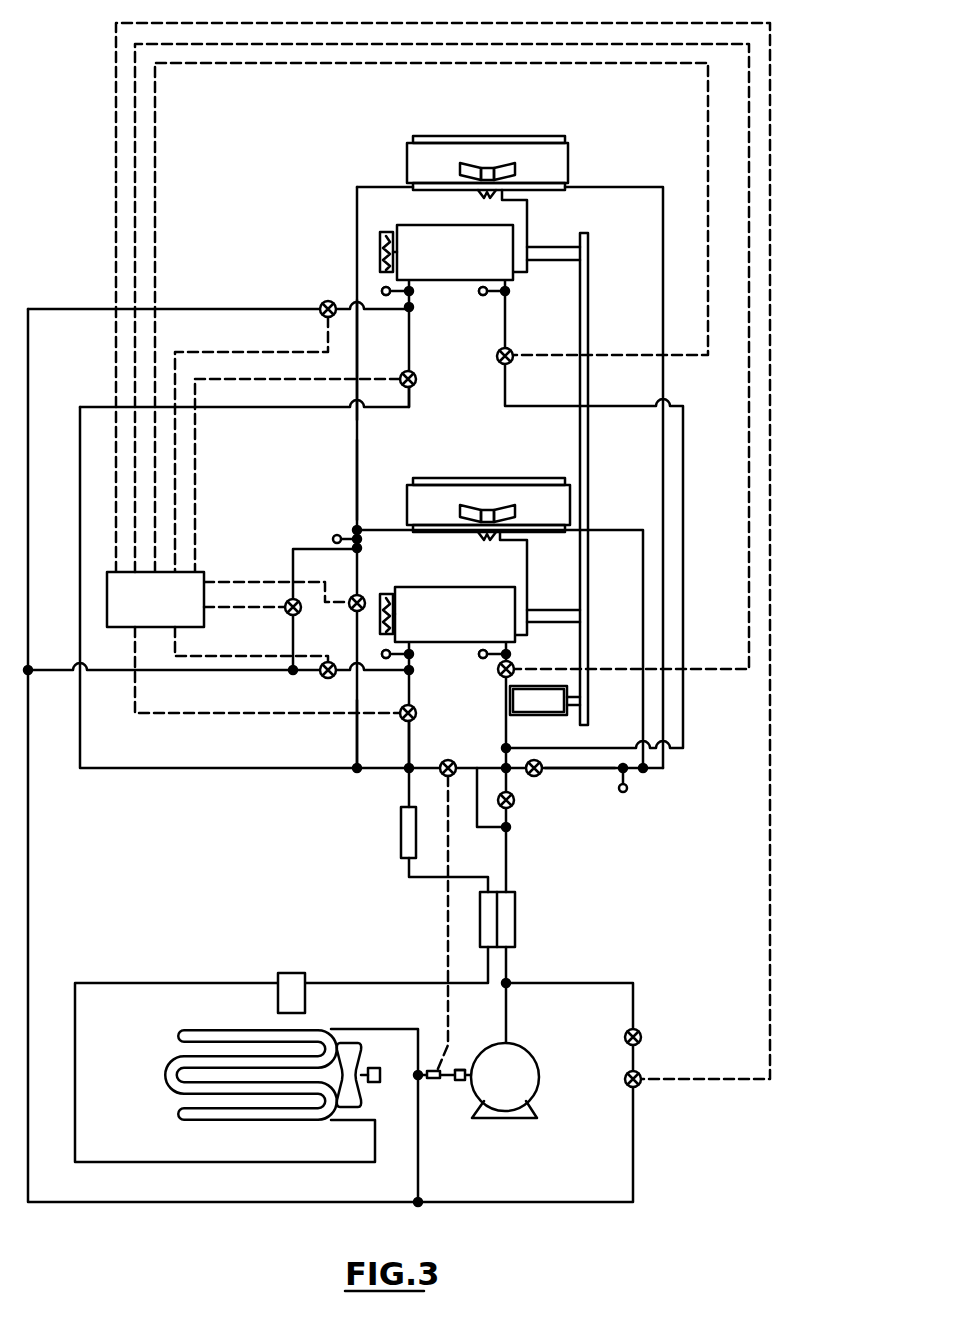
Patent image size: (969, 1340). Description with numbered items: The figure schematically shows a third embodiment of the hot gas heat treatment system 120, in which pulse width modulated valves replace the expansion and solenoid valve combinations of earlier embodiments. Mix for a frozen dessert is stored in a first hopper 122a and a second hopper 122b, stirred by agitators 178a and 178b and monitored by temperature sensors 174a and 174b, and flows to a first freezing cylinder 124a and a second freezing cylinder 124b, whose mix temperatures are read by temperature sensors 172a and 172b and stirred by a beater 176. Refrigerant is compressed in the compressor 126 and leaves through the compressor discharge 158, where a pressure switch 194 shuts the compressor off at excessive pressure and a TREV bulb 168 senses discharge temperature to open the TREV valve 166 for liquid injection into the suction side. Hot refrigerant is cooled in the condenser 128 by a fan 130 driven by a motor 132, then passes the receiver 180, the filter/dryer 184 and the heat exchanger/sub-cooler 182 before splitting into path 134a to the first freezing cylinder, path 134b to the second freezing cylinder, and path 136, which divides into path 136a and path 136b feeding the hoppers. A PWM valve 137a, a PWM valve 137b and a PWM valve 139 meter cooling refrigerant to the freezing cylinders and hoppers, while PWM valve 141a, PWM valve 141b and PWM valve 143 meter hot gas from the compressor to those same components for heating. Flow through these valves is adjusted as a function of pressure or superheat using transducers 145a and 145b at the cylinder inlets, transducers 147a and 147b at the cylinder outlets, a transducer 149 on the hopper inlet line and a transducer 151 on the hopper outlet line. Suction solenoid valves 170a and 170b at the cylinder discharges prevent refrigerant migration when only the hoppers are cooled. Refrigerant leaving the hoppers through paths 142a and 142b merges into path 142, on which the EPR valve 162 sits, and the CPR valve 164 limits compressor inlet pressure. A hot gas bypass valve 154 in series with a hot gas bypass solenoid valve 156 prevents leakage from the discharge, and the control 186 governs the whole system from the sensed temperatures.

The hot gas heat treatment system 120 is at (777, 278).
The first hopper 122a is at (437, 495).
The second hopper 122b is at (436, 163).
The first freezing cylinder 124a is at (458, 637).
The second freezing cylinder 124b is at (457, 276).
The compressor 126 is at (532, 1091).
The condenser 128 is at (165, 1085).
The fan 130 is at (349, 1042).
The motor 132 is at (374, 1082).
The path 134a is at (410, 750).
The path 134b is at (412, 405).
The path 136 is at (355, 745).
The path 136a is at (357, 492).
The path 136b is at (355, 438).
The PWM valve 137a is at (416, 713).
The PWM valve 137b is at (415, 378).
The PWM valve 139 is at (355, 596).
The PWM valve 141a is at (322, 678).
The PWM valve 141b is at (322, 315).
The path 142 is at (574, 770).
The path 142a is at (643, 617).
The path 142b is at (660, 247).
The PWM valve 143 is at (290, 615).
The pressure or temperature transducer 145a is at (383, 654).
The pressure or temperature transducer 145b is at (383, 291).
The pressure or temperature transducer 147a is at (483, 658).
The pressure or temperature transducer 147b is at (483, 295).
The pressure or temperature transducer 149 is at (334, 539).
The pressure or temperature transducer 151 is at (627, 790).
The hot gas bypass valve 154 is at (640, 1032).
The hot gas bypass solenoid valve 156 is at (641, 1082).
The compressor discharge 158 is at (462, 1082).
The EPR valve 162 is at (534, 776).
The CPR valve 164 is at (508, 808).
The TREV valve 166 is at (452, 776).
The TREV bulb 168 is at (433, 1080).
The suction solenoid valve 170a is at (511, 663).
The suction solenoid valve 170b is at (510, 362).
The temperature sensor 172a is at (383, 594).
The temperature sensor 172b is at (382, 232).
The temperature sensor 174a is at (478, 540).
The temperature sensor 174b is at (478, 197).
The beater 176 is at (560, 715).
The agitator 178a is at (510, 500).
The agitator 178b is at (518, 165).
The receiver 180 is at (278, 997).
The heat exchanger/sub-cooler 182 is at (480, 920).
The filter/dryer 184 is at (400, 845).
The control 186 is at (180, 613).
The pressure switch 194 is at (460, 1068).